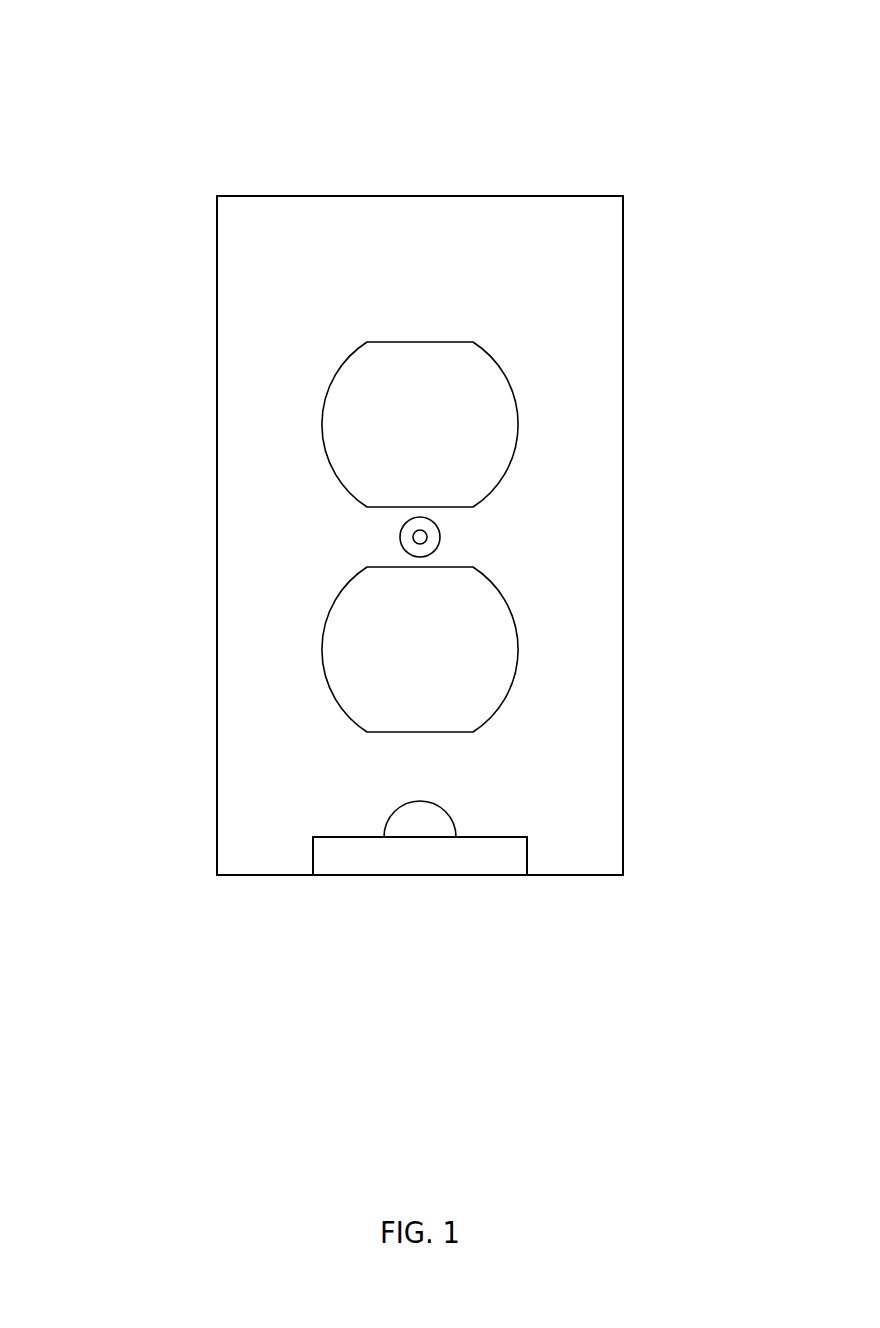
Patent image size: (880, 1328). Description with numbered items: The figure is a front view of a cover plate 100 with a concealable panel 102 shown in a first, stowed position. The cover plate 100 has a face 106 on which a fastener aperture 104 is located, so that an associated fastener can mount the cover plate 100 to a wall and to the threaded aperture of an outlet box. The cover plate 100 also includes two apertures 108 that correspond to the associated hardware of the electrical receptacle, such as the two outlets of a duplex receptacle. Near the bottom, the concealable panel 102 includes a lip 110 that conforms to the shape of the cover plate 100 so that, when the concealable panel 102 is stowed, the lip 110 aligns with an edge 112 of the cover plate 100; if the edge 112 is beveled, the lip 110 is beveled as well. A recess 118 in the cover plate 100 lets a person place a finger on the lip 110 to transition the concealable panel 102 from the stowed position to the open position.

The cover plate 100 is at (100, 80).
The concealable panel 102 is at (331, 981).
The fastener aperture 104 is at (427, 537).
The face 106 is at (603, 290).
The aperture 108 is at (348, 658).
The lip 110 is at (500, 862).
The edge 112 is at (253, 888).
The recess 118 is at (408, 824).